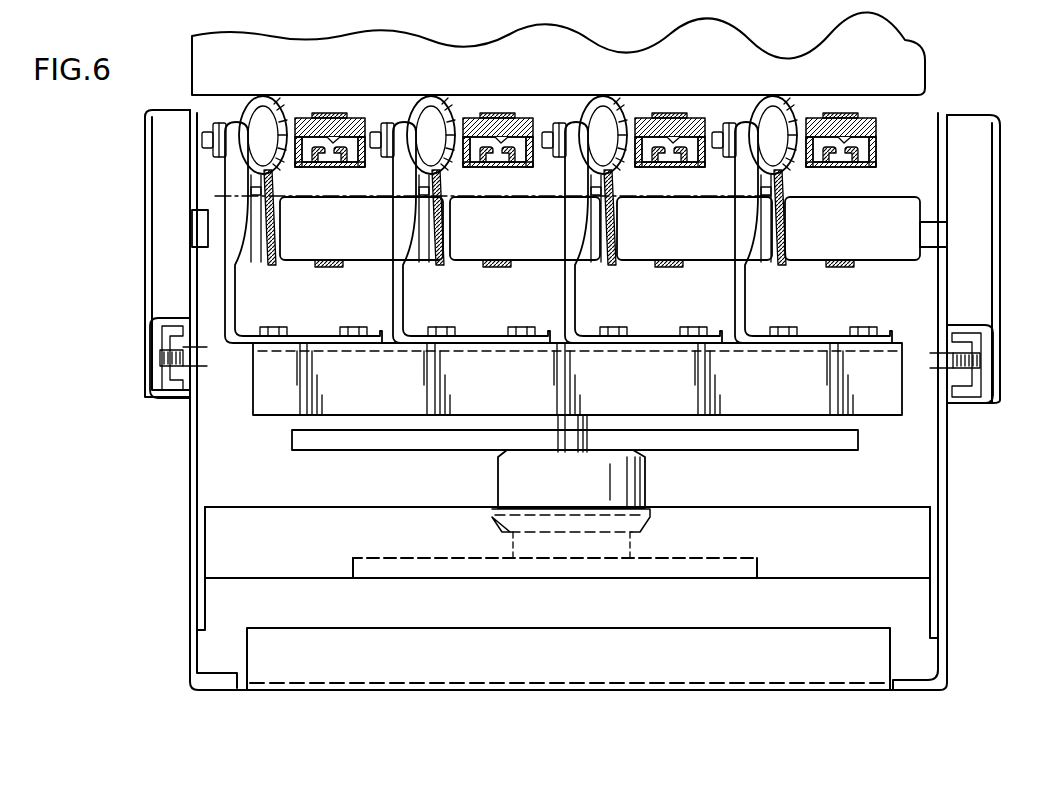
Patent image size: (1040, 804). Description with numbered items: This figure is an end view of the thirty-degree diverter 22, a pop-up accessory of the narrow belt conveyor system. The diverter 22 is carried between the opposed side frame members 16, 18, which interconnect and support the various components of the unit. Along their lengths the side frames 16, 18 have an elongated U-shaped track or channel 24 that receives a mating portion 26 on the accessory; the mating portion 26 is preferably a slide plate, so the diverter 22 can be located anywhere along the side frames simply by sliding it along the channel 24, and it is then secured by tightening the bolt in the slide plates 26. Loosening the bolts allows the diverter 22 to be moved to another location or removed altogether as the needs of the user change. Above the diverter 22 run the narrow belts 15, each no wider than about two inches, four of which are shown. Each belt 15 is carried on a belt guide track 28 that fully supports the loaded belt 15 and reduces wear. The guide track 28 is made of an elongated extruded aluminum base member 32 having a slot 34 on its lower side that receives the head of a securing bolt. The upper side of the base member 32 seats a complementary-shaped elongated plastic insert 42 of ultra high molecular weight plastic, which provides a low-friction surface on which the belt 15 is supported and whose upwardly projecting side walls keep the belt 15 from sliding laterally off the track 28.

The belt 15 is at (322, 113).
The side frame member 16 is at (145, 212).
The side frame member 18 is at (1000, 223).
The 30° diverter 22 is at (259, 96).
The U-shaped track or channel 24 is at (172, 320).
The mating portion 26 is at (168, 383).
The belt guide track 28 is at (348, 175).
The base member 32 is at (315, 165).
The slot 34 is at (336, 166).
The plastic insert 42 is at (352, 117).